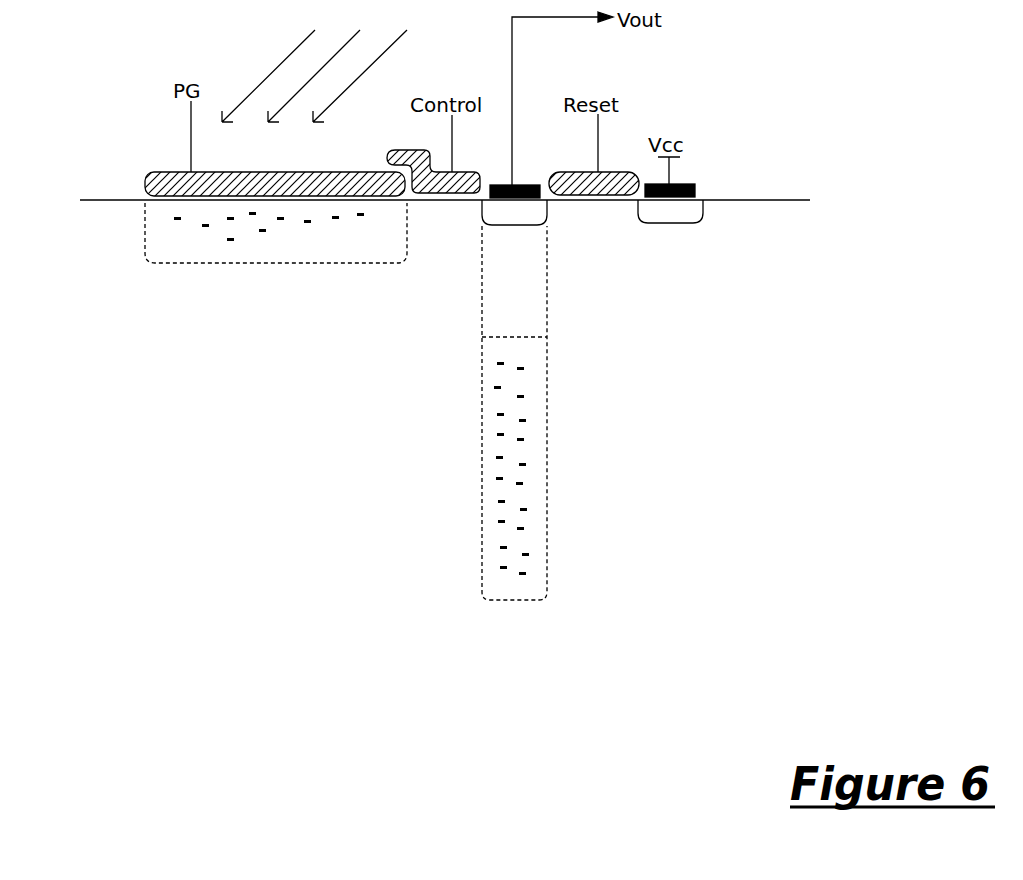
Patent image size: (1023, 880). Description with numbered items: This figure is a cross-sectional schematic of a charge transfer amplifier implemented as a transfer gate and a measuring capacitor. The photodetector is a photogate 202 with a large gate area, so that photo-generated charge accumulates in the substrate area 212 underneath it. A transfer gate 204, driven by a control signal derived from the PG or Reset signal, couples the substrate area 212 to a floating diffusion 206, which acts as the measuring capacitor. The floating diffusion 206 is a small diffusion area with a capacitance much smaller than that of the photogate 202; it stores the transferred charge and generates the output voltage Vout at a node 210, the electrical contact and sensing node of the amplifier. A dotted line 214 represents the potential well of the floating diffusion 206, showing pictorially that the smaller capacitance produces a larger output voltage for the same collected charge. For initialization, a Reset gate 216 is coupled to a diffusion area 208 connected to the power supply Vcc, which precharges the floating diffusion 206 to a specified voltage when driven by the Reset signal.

The photogate 202 is at (146, 193).
The transfer gate 204 is at (421, 151).
The floating diffusion 206 is at (520, 226).
The diffusion area 208 is at (703, 216).
The node 210 is at (518, 184).
The substrate area 212 is at (151, 257).
The dotted line 214 is at (547, 358).
The Reset gate 216 is at (585, 197).